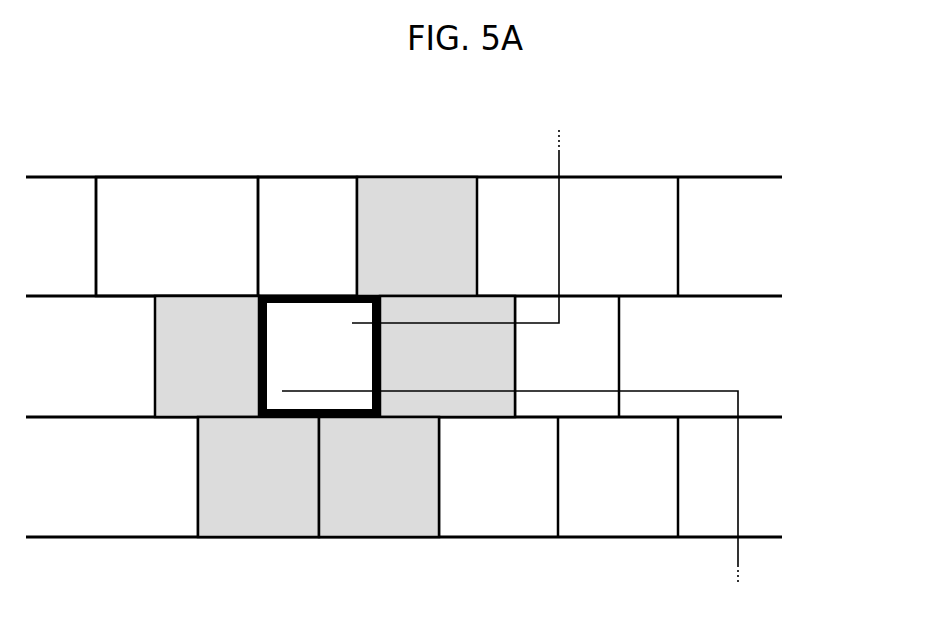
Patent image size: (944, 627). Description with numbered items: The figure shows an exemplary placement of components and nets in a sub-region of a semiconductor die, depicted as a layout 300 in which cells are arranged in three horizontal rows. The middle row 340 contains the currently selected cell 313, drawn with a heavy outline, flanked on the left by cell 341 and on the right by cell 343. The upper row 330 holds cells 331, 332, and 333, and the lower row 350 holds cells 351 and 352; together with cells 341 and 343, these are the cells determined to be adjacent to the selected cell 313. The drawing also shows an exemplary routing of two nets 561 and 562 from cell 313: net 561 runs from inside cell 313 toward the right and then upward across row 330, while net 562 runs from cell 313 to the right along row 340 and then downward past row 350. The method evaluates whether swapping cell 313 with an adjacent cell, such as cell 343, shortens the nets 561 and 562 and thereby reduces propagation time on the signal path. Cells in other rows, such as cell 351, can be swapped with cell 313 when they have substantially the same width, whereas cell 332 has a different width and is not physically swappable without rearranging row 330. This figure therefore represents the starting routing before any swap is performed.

The layout 300 is at (737, 103).
The row 330 is at (798, 178).
The row 340 is at (798, 298).
The row 350 is at (798, 419).
The cell 331 is at (177, 236).
The cell 332 is at (307, 236).
The cell 333 is at (417, 236).
The cell 341 is at (207, 356).
The cell 313 is at (319, 356).
The cell 343 is at (447, 356).
The cell 351 is at (258, 477).
The cell 352 is at (379, 477).
The net 561 is at (561, 235).
The net 562 is at (707, 390).